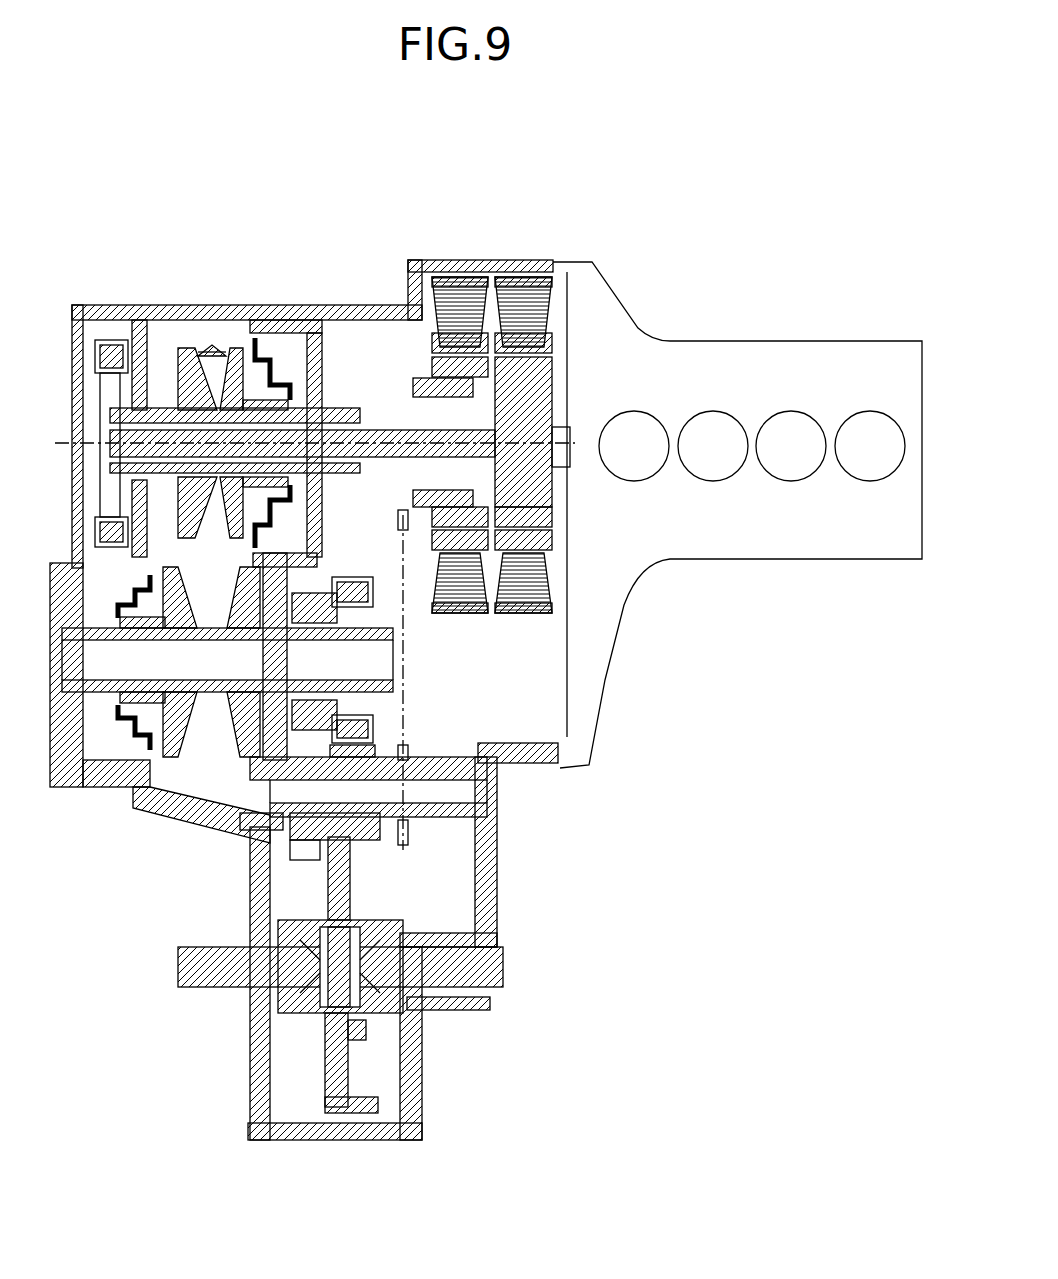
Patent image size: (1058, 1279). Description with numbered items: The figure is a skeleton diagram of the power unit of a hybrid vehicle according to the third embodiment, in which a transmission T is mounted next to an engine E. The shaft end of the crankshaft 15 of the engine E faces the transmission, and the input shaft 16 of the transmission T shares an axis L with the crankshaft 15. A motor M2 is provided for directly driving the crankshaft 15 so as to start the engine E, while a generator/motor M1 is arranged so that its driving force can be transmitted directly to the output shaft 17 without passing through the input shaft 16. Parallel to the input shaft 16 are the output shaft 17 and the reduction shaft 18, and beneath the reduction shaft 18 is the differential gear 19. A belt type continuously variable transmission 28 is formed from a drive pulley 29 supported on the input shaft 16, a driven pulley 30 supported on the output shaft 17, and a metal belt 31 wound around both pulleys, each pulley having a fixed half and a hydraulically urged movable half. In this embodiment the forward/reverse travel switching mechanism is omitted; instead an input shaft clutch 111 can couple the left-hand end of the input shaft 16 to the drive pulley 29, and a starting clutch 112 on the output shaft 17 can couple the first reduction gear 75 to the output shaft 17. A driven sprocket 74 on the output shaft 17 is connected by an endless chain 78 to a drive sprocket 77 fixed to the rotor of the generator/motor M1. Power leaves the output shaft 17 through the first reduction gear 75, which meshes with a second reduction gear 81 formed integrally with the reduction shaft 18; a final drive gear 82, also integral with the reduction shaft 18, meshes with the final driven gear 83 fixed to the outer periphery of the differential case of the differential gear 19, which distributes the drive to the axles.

The transmission T is at (318, 250).
The engine E is at (725, 328).
The generator/motor M1 is at (455, 275).
The motor M2 is at (522, 275).
The axis L is at (525, 450).
The crankshaft 15 is at (560, 410).
The input shaft 16 is at (380, 430).
The output shaft 17 is at (105, 690).
The reduction shaft 18 is at (440, 818).
The differential gear 19 is at (310, 1030).
The belt type continuously variable transmission 28 is at (212, 757).
The drive pulley 29 is at (185, 343).
The driven pulley 30 is at (220, 618).
The metal belt 31 is at (212, 343).
The driven sprocket 74 is at (410, 750).
The first reduction gear 75 is at (305, 592).
The drive sprocket 77 is at (400, 514).
The endless chain 78 is at (405, 628).
The second reduction gear 81 is at (305, 858).
The final drive gear 82 is at (375, 748).
The final driven gear 83 is at (350, 1115).
The input shaft clutch 111 is at (105, 335).
The starting clutch 112 is at (341, 573).